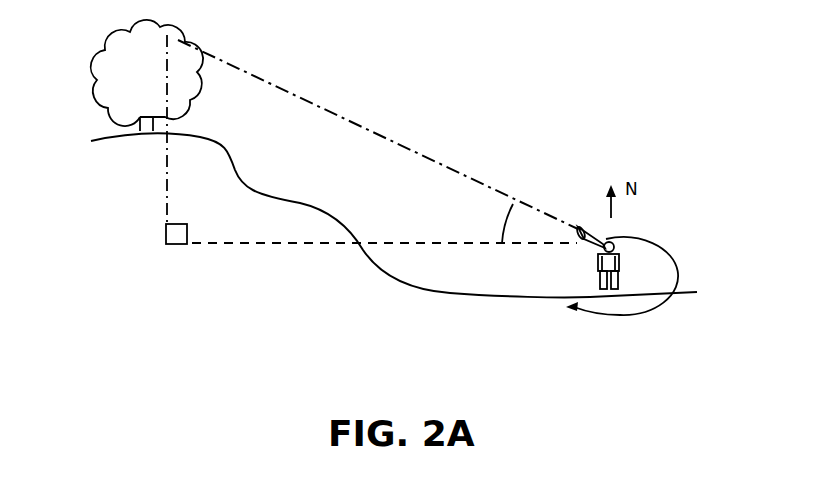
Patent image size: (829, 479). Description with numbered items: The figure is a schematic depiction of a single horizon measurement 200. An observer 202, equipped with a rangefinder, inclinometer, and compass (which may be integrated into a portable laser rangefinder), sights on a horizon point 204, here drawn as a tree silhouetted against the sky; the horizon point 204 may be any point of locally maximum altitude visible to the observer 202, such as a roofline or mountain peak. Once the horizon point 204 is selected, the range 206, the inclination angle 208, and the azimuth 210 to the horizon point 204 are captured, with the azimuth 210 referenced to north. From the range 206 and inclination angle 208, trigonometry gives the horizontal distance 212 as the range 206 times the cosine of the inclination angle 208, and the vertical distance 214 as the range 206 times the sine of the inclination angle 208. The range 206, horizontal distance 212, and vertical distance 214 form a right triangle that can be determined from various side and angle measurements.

The single horizon measurement 200 is at (577, 114).
The observer 202 is at (597, 266).
The horizon point 204 is at (98, 60).
The range 206 is at (402, 97).
The inclination angle 208 is at (443, 222).
The azimuth 210 is at (712, 338).
The horizontal distance 212 is at (287, 281).
The vertical distance 214 is at (127, 180).